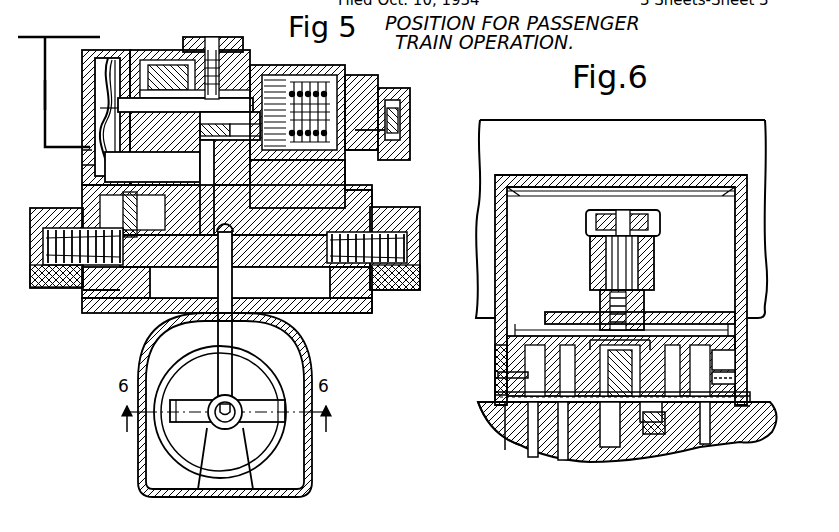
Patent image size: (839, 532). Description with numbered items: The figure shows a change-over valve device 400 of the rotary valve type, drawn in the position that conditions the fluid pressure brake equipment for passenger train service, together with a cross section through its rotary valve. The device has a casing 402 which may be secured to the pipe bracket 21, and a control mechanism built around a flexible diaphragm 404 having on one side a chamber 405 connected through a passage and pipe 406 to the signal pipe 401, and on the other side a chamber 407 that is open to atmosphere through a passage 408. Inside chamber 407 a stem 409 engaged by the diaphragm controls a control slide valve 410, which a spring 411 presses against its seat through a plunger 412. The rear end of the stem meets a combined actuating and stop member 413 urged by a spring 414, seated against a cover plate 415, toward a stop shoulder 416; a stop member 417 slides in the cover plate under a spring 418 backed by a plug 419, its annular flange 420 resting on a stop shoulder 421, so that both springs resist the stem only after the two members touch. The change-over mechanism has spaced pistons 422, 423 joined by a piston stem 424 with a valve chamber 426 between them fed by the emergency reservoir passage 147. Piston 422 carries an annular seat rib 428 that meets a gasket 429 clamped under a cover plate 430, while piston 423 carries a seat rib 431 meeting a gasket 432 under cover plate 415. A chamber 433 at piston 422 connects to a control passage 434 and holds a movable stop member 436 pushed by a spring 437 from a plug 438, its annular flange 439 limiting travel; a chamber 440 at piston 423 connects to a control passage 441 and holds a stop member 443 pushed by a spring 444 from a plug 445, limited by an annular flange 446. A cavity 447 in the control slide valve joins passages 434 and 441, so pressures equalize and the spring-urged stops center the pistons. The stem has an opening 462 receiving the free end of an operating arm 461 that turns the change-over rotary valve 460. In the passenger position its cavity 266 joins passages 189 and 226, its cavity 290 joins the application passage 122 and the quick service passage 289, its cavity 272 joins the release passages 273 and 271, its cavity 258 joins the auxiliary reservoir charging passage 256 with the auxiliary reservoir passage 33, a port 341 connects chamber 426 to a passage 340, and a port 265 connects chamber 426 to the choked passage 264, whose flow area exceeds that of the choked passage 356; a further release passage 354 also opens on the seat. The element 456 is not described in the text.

In FIG. 5, the change-over valve device 400 is at (165, 50).
In FIG. 6, the change-over valve device 400 is at (728, 118).
In FIG. 5, the signal pipe 401 is at (59, 81).
In FIG. 5, the casing 402 is at (95, 58).
In FIG. 5, the flexible diaphragm 404 is at (100, 74).
In FIG. 5, the chamber 405 is at (104, 90).
In FIG. 5, the passage and pipe 406 is at (45, 95).
In FIG. 5, the chamber 407 is at (118, 95).
In FIG. 5, the passage 408 is at (152, 168).
In FIG. 5, the stem 409 is at (195, 88).
In FIG. 5, the control slide valve 410 is at (185, 115).
In FIG. 5, the spring 411 is at (167, 77).
In FIG. 5, the plunger 412 is at (222, 45).
In FIG. 5, the combined actuating and stop member 413 is at (270, 72).
In FIG. 5, the spring 414 is at (266, 78).
In FIG. 5, the cover plate 415 is at (365, 80).
In FIG. 5, the stop shoulder 416 is at (244, 124).
In FIG. 5, the stop member 417 is at (330, 85).
In FIG. 5, the spring 418 is at (392, 94).
In FIG. 5, the plug 419 is at (400, 102).
In FIG. 5, the annular flange 420 is at (398, 118).
In FIG. 5, the stop shoulder 421 is at (394, 134).
In FIG. 5, the piston 422 is at (132, 240).
In FIG. 5, the piston 423 is at (365, 312).
In FIG. 5, the piston stem 424 is at (150, 290).
In FIG. 5, the valve chamber 426 is at (200, 222).
In FIG. 5, the annular seat rib 428 is at (85, 310).
In FIG. 5, the gasket 429 is at (85, 298).
In FIG. 5, the cover plate 430 is at (95, 130).
In FIG. 5, the annular seat rib 431 is at (372, 292).
In FIG. 5, the gasket 432 is at (378, 180).
In FIG. 5, the chamber 433 is at (78, 290).
In FIG. 5, the control passage 434 is at (92, 168).
In FIG. 5, the movable stop member 436 is at (88, 188).
In FIG. 5, the spring 437 is at (45, 265).
In FIG. 5, the plug 438 is at (90, 152).
In FIG. 5, the annular flange 439 is at (55, 282).
In FIG. 5, the chamber 440 is at (412, 276).
In FIG. 5, the control passage 441 is at (390, 152).
In FIG. 5, the stop member 443 is at (352, 200).
In FIG. 5, the spring 444 is at (412, 214).
In FIG. 5, the plug 445 is at (412, 236).
In FIG. 5, the annular flange 446 is at (412, 256).
In FIG. 5, the cavity 447 is at (205, 139).
In FIG. 5, the stem 456 is at (100, 110).
In FIG. 5, the change-over rotary valve 460 is at (262, 433).
In FIG. 6, the change-over rotary valve 460 is at (505, 352).
In FIG. 5, the operating arm 461 is at (258, 318).
In FIG. 6, the operating arm 461 is at (600, 222).
In FIG. 5, the opening 462 is at (155, 266).
In FIG. 5, the emergency reservoir passage 147 is at (148, 432).
In FIG. 6, the emergency reservoir passage 147 is at (500, 375).
In FIG. 6, the pipe bracket 21 is at (770, 430).
In FIG. 6, the auxiliary reservoir passage 33 is at (748, 420).
In FIG. 6, the application passage 122 is at (500, 440).
In FIG. 6, the application and release passage 189 is at (540, 398).
In FIG. 6, the application and release passage 226 is at (500, 422).
In FIG. 6, the auxiliary reservoir charging passage 256 is at (735, 380).
In FIG. 6, the cavity 258 is at (700, 340).
In FIG. 6, the choked passage 264 is at (660, 440).
In FIG. 6, the port 265 is at (654, 290).
In FIG. 6, the cavity 266 is at (545, 345).
In FIG. 6, the release passage 271 is at (642, 450).
In FIG. 6, the cavity 272 is at (612, 330).
In FIG. 6, the release passage 273 is at (560, 455).
In FIG. 6, the quick service passage 289 is at (715, 372).
In FIG. 6, the cavity 290 is at (644, 320).
In FIG. 6, the passage 340 is at (530, 445).
In FIG. 6, the port 341 is at (590, 340).
In FIG. 6, the release passage 354 is at (612, 455).
In FIG. 6, the choked passage 356 is at (712, 445).